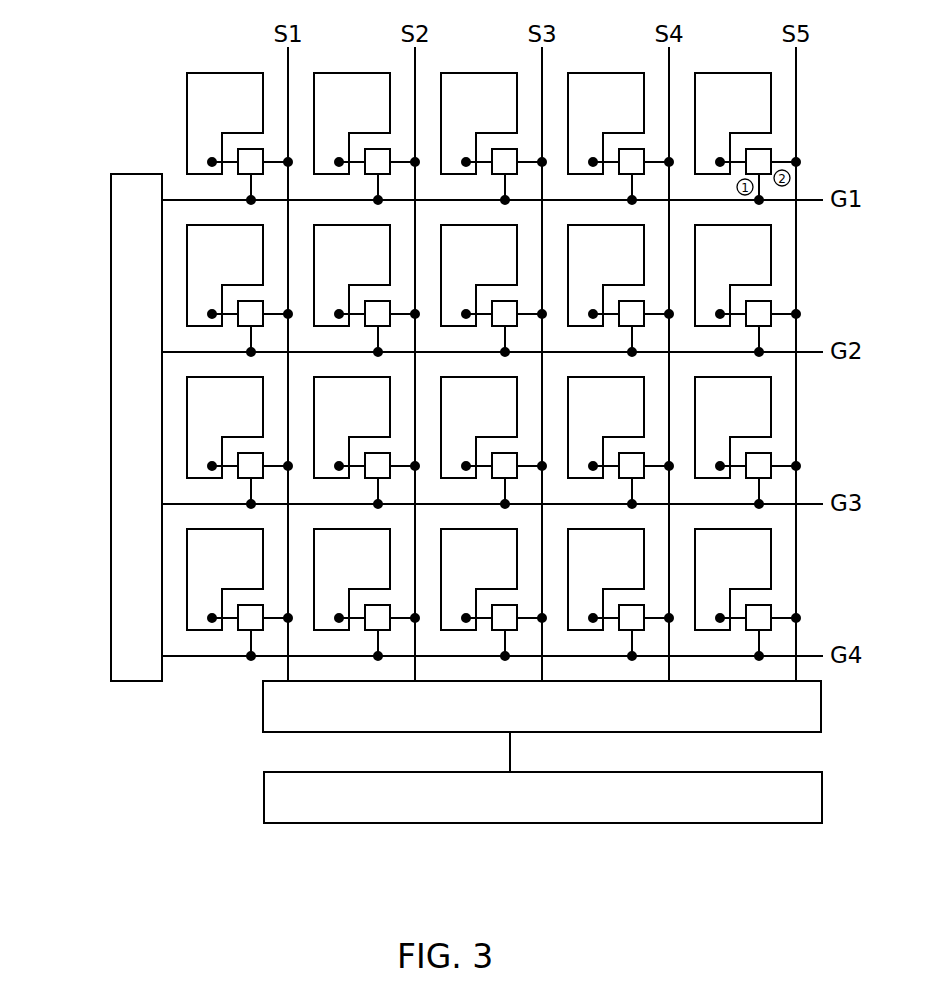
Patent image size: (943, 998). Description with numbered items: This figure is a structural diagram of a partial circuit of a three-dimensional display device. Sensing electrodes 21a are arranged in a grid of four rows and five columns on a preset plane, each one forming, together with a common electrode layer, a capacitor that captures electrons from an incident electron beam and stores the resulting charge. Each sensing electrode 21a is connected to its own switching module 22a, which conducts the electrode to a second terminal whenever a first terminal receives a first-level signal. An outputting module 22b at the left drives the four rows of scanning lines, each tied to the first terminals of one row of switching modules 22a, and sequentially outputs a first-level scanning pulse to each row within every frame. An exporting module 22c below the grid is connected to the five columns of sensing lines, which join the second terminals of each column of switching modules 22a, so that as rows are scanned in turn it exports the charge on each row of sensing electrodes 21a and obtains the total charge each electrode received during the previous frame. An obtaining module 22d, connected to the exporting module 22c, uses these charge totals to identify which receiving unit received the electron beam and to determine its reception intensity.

The sensing electrode 21a is at (200, 92).
The switching module 22a is at (758, 162).
The outputting module 22b is at (127, 198).
The exporting module 22c is at (277, 707).
The obtaining module 22d is at (268, 787).